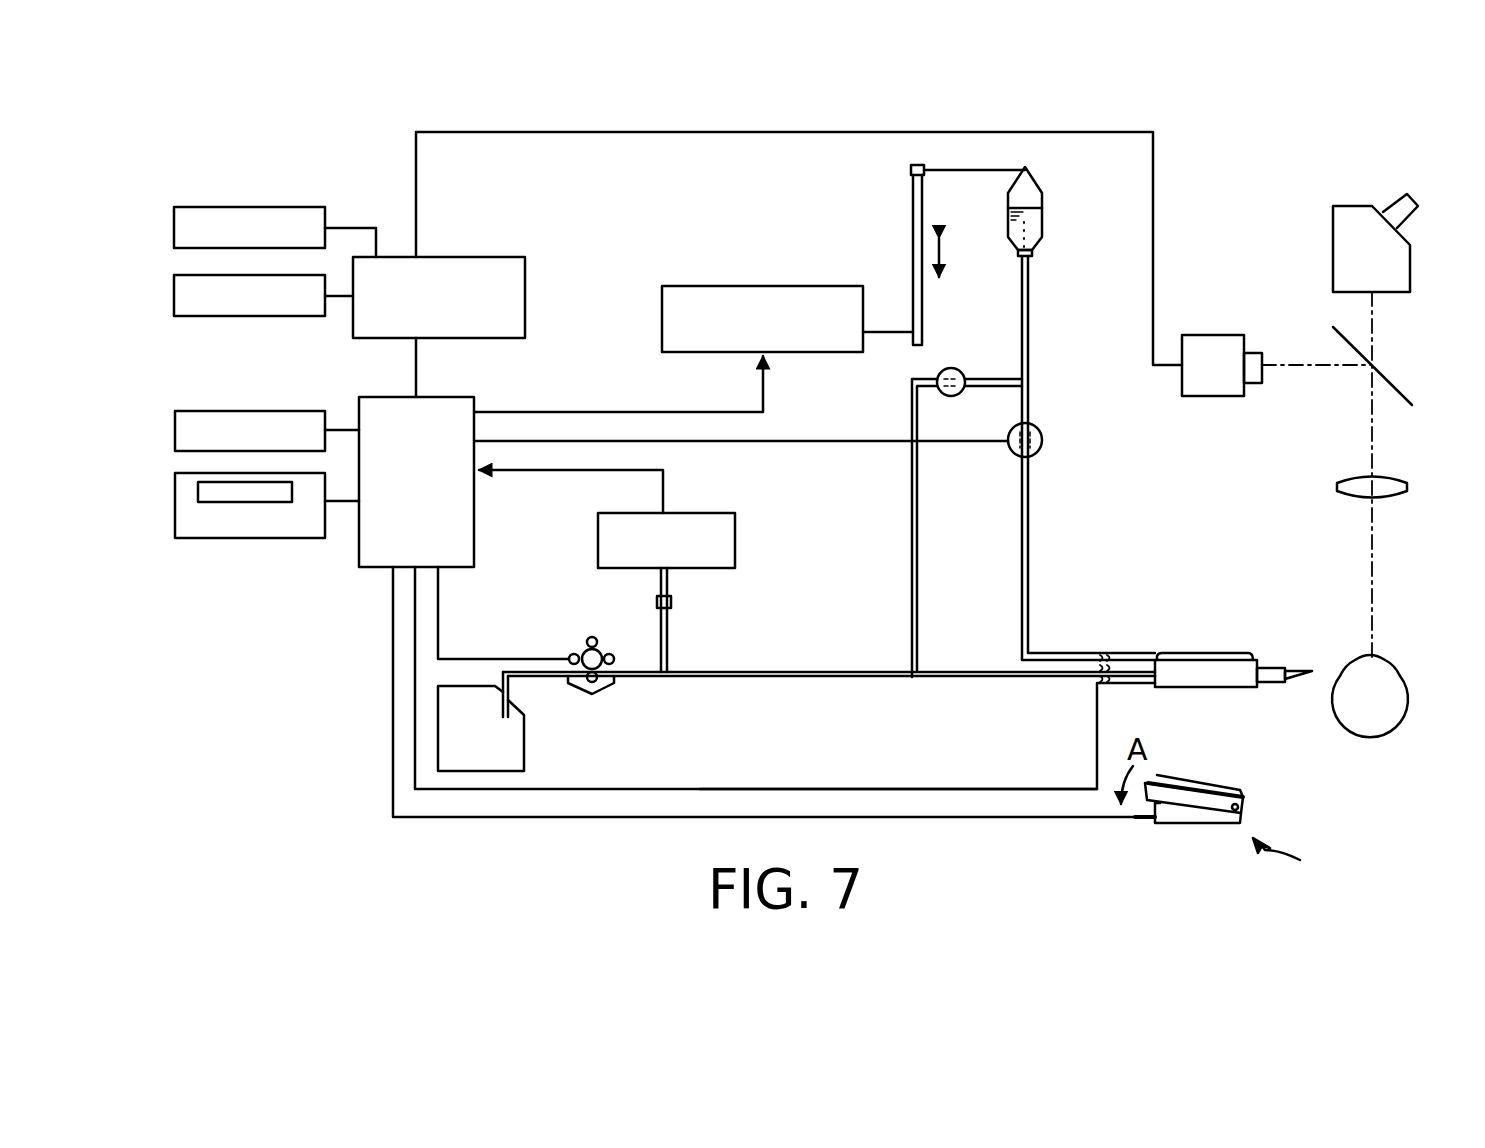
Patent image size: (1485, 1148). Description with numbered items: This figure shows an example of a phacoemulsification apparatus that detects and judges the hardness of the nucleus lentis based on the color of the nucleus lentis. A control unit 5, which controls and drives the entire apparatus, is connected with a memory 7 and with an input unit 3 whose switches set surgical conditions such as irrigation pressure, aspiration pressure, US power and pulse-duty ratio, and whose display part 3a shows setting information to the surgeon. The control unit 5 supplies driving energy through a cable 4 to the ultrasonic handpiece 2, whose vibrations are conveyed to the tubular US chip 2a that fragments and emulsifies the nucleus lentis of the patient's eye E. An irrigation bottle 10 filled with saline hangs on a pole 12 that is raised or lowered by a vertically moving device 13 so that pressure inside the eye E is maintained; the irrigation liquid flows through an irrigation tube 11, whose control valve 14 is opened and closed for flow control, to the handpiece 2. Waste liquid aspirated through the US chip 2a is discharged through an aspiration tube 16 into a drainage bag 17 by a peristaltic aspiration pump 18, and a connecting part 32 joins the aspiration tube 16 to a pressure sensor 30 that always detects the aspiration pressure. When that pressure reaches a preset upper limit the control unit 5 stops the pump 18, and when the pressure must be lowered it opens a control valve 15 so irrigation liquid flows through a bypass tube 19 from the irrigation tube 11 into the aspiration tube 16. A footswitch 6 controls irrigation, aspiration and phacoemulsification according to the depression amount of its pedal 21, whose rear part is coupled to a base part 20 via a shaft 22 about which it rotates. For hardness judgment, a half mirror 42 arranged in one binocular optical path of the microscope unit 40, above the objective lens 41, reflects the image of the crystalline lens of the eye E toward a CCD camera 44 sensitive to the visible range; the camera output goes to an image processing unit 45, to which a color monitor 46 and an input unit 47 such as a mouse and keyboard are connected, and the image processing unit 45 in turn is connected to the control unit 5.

The color monitor 46 is at (174, 228).
The input unit 47 is at (174, 296).
The image processing unit 45 is at (458, 257).
The memory 7 is at (190, 409).
The input unit 3 is at (175, 526).
The display part 3a is at (198, 490).
The control unit 5 is at (372, 553).
The vertically moving device 13 is at (662, 302).
The pressure sensor 30 is at (710, 513).
The connecting part 32 is at (673, 606).
The pole 12 is at (913, 248).
The irrigation bottle 10 is at (1042, 222).
The irrigation tube 11 is at (1028, 327).
The control valve 15 is at (950, 368).
The bypass tube 19 is at (917, 614).
The control valve 14 is at (1041, 430).
The peristaltic aspiration pump 18 is at (572, 636).
The aspiration tube 16 is at (797, 670).
The drainage bag 17 is at (505, 741).
The cable 4 is at (825, 787).
The ultrasonic handpiece 2 is at (1230, 672).
The US chip 2a is at (1289, 670).
The patient's eye E is at (1398, 704).
The binocular microscope unit 40 is at (1410, 255).
The CCD camera 44 is at (1215, 335).
The half mirror 42 is at (1390, 377).
The objective lens 41 is at (1338, 485).
The base part 20 is at (1180, 815).
The pedal 21 is at (1175, 792).
The shaft 22 is at (1240, 802).
The footswitch 6 is at (1300, 860).